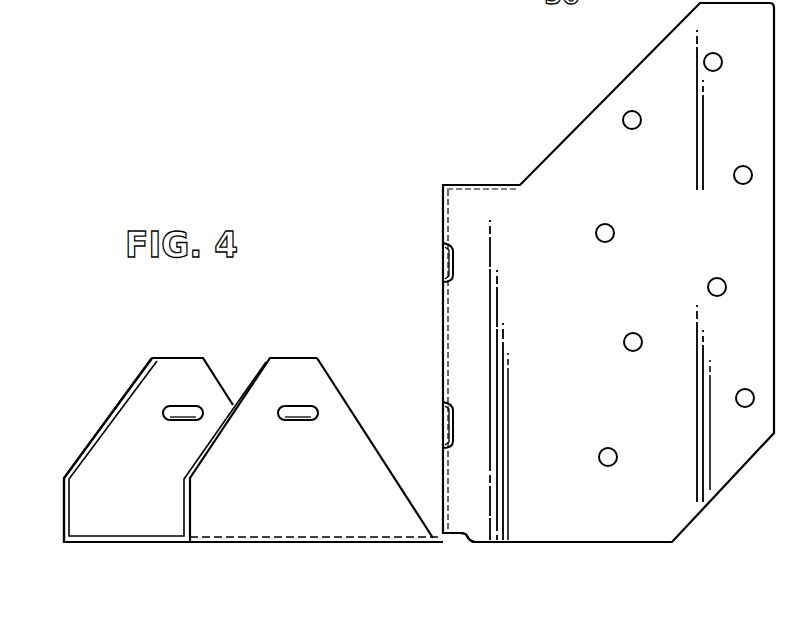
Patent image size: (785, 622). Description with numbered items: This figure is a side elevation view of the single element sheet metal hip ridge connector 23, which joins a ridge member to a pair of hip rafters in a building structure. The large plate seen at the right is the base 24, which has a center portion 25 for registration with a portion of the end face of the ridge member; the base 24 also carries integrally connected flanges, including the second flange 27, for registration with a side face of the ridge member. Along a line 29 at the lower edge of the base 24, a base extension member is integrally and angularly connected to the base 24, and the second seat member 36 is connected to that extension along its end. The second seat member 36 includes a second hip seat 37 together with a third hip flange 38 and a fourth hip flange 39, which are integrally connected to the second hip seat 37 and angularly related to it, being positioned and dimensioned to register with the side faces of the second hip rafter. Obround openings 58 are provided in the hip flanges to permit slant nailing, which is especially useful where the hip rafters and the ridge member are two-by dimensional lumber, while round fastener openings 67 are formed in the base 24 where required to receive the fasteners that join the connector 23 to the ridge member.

The hip ridge connector 23 is at (466, 151).
The base 24 is at (602, 98).
The center portion 25 is at (442, 310).
The second flange 27 is at (552, 320).
The line 29 is at (447, 541).
The second seat member 36 is at (170, 356).
The second hip seat 37 is at (106, 536).
The third hip flange 38 is at (95, 462).
The fourth hip flange 39 is at (352, 437).
The obround opening 58 is at (176, 424).
The round fastener opening 67 is at (637, 334).